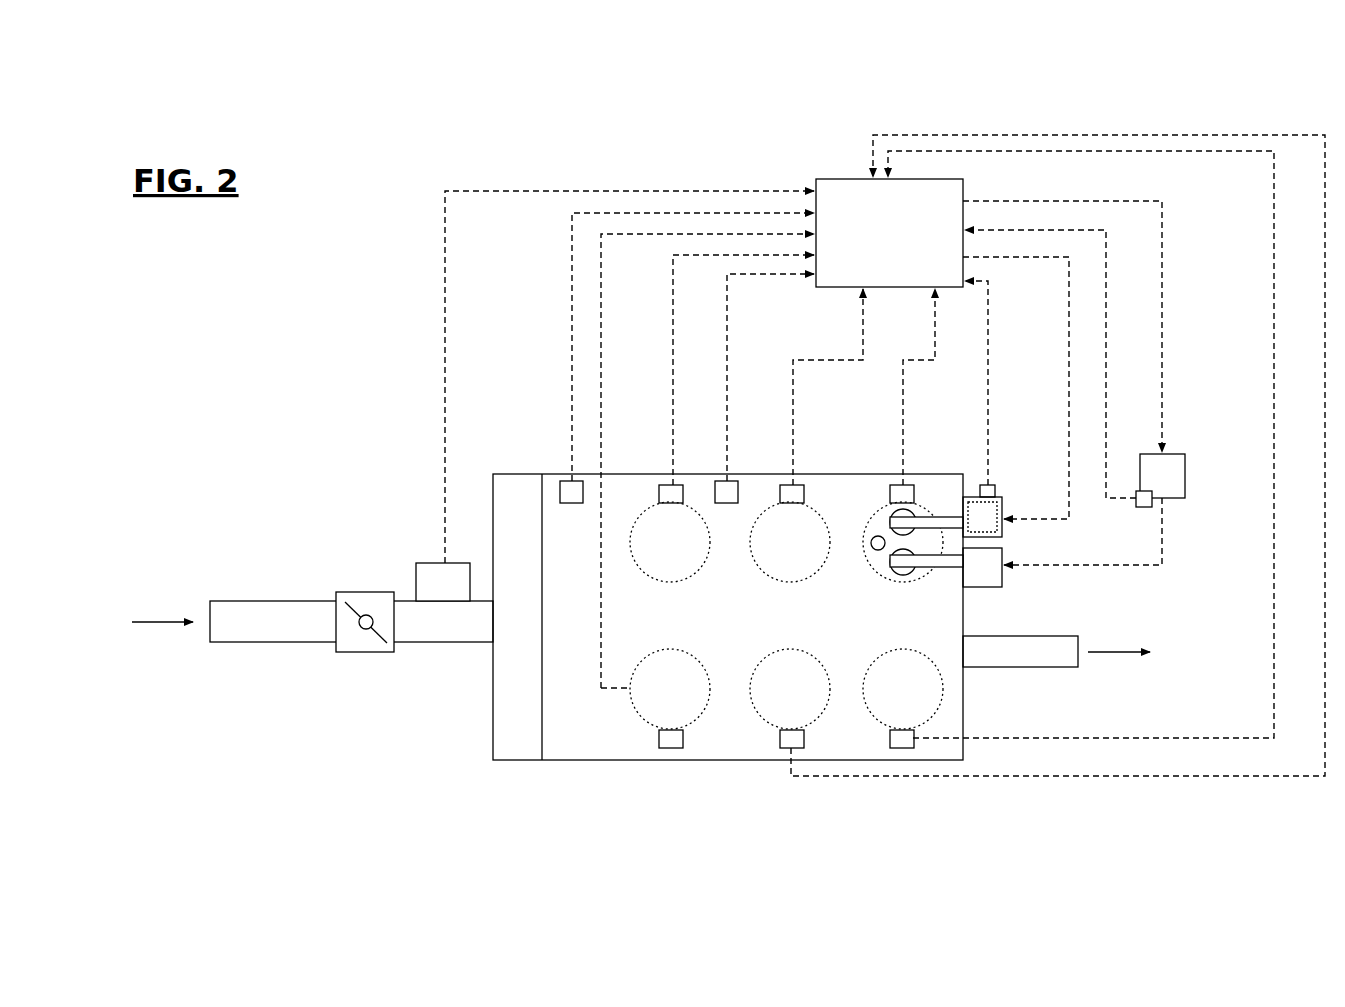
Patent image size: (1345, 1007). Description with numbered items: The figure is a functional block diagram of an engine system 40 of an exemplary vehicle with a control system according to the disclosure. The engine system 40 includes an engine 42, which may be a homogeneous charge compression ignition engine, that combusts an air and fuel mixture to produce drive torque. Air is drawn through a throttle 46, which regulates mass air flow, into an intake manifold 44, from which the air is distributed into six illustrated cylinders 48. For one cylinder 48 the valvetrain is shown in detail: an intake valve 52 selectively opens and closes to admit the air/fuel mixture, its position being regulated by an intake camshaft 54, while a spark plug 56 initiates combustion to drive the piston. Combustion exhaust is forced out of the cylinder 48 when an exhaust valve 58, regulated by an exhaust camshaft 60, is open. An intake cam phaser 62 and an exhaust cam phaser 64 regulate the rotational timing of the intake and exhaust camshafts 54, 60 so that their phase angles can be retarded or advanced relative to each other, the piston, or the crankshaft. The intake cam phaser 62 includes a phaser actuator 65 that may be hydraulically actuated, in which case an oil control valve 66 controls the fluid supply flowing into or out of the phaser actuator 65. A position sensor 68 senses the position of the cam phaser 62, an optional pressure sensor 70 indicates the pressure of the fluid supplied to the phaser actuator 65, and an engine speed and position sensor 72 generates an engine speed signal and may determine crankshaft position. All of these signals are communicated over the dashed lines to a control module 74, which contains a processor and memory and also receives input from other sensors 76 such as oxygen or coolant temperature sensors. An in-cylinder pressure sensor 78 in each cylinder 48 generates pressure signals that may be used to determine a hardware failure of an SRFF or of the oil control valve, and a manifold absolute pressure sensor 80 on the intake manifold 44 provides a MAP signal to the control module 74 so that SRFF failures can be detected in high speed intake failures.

The engine system 40 is at (680, 88).
The engine 42 is at (925, 760).
The intake manifold 44 is at (496, 760).
The throttle 46 is at (383, 652).
The cylinders 48 is at (888, 582).
The intake valve 52 is at (909, 480).
The intake camshaft 54 is at (928, 517).
The spark plug 56 is at (882, 549).
The exhaust valve 58 is at (913, 595).
The exhaust camshaft 60 is at (953, 568).
The intake cam phaser 62 is at (1011, 509).
The exhaust cam phaser 64 is at (1003, 580).
The phaser actuator 65 is at (1003, 537).
The oil control valve 66 is at (1172, 454).
The position sensor 68 is at (983, 485).
The pressure sensor 70 is at (1143, 507).
The engine speed and position sensor 72 is at (566, 481).
The control module 74 is at (832, 179).
The other sensors 76 is at (735, 481).
The in-cylinder pressure sensor 78 is at (668, 485).
The manifold absolute pressure sensor 80 is at (455, 563).